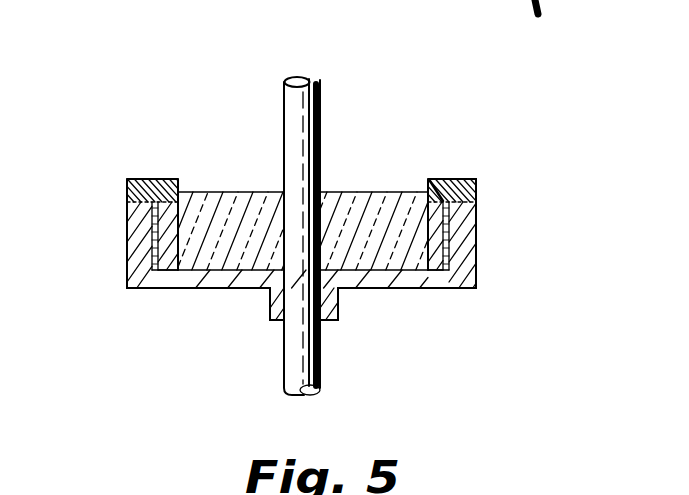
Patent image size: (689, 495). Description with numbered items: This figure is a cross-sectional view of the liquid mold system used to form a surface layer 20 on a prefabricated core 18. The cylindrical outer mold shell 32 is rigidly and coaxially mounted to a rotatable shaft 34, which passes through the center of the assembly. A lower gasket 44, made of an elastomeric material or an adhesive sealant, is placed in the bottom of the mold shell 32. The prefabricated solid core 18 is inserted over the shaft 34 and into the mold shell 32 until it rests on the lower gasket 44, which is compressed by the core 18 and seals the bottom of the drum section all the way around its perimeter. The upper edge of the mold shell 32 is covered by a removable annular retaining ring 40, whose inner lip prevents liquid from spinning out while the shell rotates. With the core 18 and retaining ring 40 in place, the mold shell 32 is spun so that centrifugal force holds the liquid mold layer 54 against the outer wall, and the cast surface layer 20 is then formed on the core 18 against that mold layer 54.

The core 18 is at (363, 197).
The surface layer 20 is at (170, 270).
The mold shell 32 is at (462, 247).
The shaft 34 is at (308, 117).
The retaining ring 40 is at (140, 178).
The lower gasket 44 is at (477, 200).
The mold layer 54 is at (152, 276).